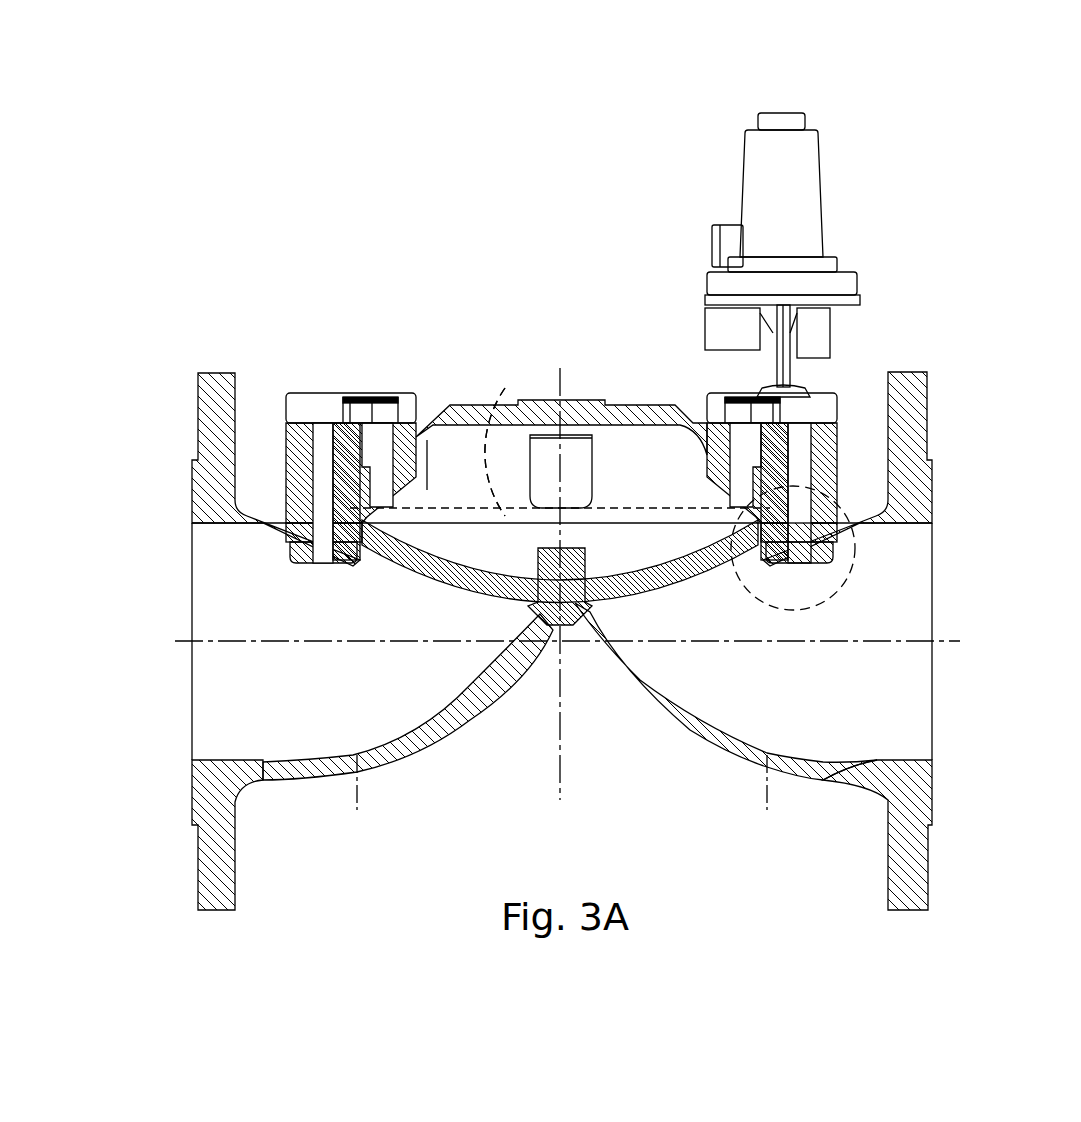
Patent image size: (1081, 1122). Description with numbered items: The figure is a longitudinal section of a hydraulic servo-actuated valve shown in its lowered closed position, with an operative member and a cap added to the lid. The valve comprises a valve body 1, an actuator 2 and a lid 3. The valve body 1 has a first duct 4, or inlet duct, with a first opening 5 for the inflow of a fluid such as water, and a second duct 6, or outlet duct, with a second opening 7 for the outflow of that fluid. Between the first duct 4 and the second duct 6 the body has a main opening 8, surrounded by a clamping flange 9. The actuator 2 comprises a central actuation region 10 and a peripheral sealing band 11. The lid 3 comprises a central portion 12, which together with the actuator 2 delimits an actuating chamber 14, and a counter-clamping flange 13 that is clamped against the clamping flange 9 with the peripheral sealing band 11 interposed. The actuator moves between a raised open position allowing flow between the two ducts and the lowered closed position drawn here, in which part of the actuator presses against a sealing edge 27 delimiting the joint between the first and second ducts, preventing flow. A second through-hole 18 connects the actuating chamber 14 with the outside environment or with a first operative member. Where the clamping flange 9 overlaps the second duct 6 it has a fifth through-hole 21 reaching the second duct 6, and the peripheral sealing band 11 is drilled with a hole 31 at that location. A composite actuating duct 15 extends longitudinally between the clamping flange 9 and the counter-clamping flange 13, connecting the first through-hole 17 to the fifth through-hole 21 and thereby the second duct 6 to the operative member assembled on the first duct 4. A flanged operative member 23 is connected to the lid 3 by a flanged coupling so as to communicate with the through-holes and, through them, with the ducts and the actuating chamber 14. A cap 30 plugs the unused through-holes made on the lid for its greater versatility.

The valve body 1 is at (406, 755).
The actuator 2 is at (470, 595).
The lid 3 is at (628, 404).
The first duct 4 is at (808, 730).
The first opening 5 is at (935, 688).
The second duct 6 is at (300, 732).
The second opening 7 is at (192, 686).
The main opening 8 is at (365, 556).
The clamping flange 9 is at (797, 557).
The central actuation region 10 is at (648, 585).
The peripheral sealing band 11 is at (833, 547).
The central portion 12 is at (432, 472).
The counter-clamping flange 13 is at (298, 450).
The actuating chamber 14 is at (666, 503).
The composite actuating duct 15 is at (508, 405).
The first through-hole 17 is at (803, 445).
The second through-hole 18 is at (692, 430).
The fifth through-hole 21 is at (322, 558).
The flanged operative member 23 is at (812, 187).
The sealing edge 27 is at (612, 600).
The cap 30 is at (318, 405).
The hole 31 is at (327, 532).